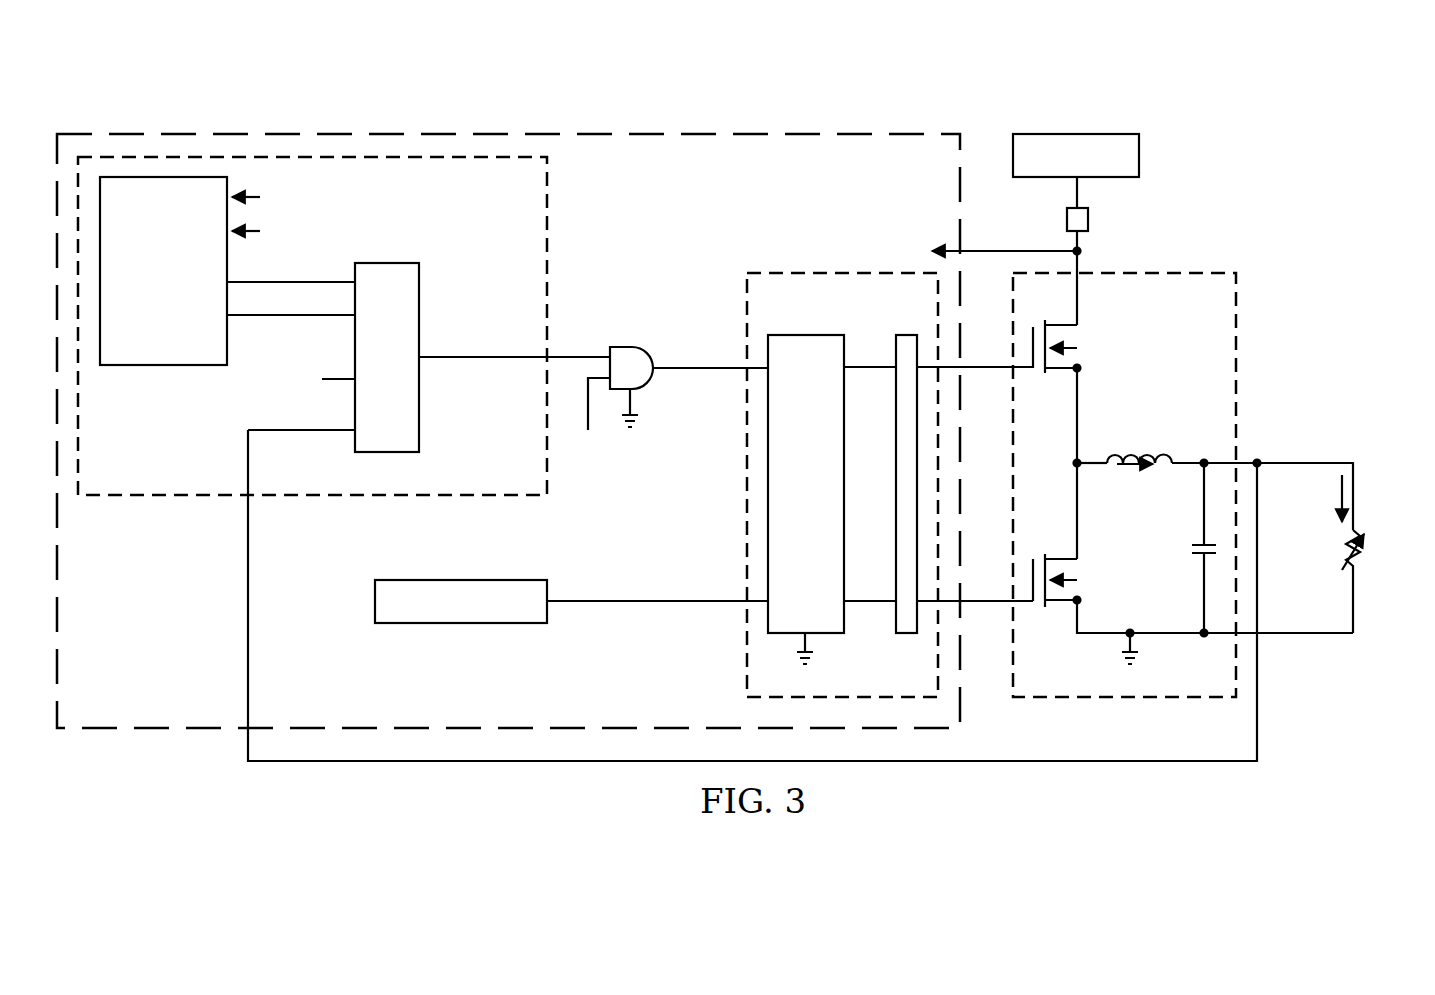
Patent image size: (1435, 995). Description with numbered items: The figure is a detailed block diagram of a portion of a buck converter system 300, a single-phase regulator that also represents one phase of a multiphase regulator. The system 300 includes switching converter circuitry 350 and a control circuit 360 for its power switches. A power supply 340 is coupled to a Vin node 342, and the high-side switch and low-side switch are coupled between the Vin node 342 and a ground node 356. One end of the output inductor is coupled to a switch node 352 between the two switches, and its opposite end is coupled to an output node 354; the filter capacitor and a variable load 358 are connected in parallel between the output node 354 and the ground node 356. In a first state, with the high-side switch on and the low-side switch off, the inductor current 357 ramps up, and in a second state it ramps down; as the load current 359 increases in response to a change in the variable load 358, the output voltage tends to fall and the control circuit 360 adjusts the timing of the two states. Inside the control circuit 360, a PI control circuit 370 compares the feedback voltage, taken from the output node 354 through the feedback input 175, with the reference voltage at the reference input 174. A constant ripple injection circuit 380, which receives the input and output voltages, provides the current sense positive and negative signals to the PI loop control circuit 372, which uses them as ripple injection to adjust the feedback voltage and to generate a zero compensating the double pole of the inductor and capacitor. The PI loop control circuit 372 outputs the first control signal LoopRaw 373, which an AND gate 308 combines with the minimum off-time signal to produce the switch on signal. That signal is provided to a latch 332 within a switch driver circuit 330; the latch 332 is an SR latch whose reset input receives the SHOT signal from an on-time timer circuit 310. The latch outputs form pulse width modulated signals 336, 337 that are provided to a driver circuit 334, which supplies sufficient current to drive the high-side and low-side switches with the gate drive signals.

The buck converter system 300 is at (1030, 45).
The control circuit 360 is at (333, 132).
The PI control circuit 370 is at (187, 499).
The constant ripple injection circuit 380 is at (163, 367).
The proportional-integral (PI) loop control circuit 372 is at (388, 262).
The reference voltage VREF input 174 is at (340, 378).
The feedback voltage VFB input 175 is at (345, 433).
The LOOPRAW output signal 373 is at (482, 360).
The AND gate 308 is at (640, 346).
The switch driver circuit 330 is at (862, 270).
The latch 332 is at (815, 334).
The pulse width modulated signal 336 is at (865, 366).
The pulse width modulated signal 337 is at (872, 603).
The driver circuit 334 is at (902, 634).
The on-time timer circuit 310 is at (460, 624).
The power supply 340 is at (1082, 133).
The Vin node 342 is at (1066, 219).
The switching converter circuitry 350 is at (1175, 270).
The switch node 352 is at (1072, 462).
The output node 354 is at (1198, 468).
The ground node 356 is at (1118, 656).
The inductor current 357 is at (1135, 468).
The variable load 358 is at (1348, 545).
The load current 359 is at (1338, 505).